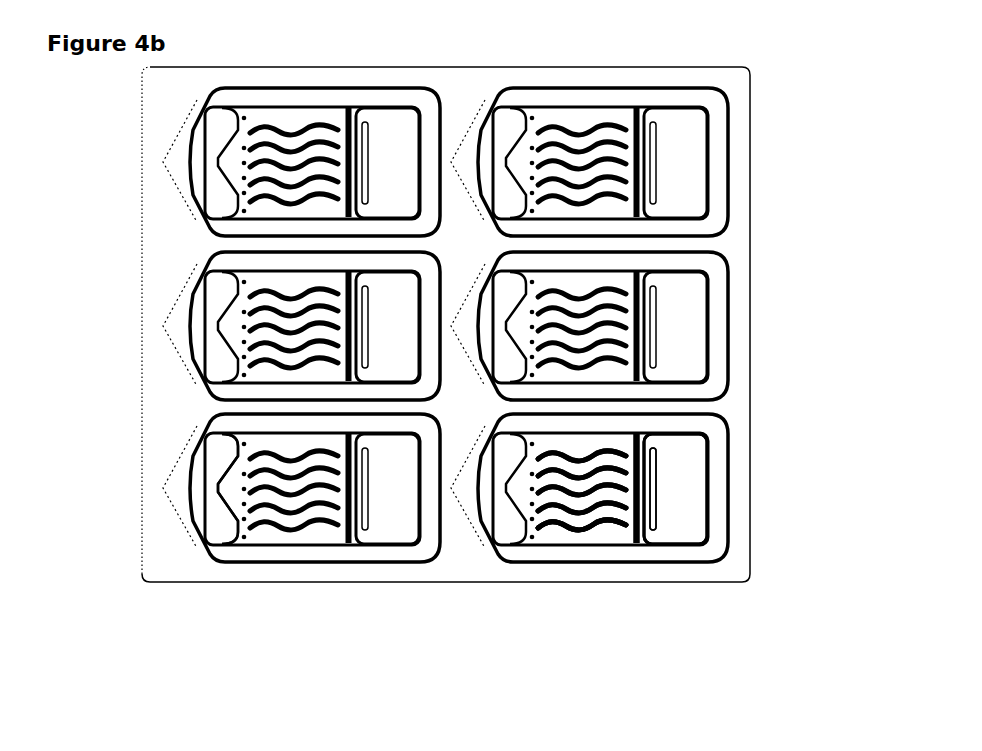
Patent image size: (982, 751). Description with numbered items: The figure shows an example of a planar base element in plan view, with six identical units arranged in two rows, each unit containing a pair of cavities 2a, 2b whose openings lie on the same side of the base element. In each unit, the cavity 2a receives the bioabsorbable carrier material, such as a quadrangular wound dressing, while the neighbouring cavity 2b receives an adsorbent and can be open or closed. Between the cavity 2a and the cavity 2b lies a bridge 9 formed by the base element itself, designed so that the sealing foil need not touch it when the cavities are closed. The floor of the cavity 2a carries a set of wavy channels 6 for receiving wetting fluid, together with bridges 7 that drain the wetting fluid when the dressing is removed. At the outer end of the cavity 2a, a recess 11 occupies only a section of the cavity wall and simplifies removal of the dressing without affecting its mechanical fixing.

The cavity 2a is at (605, 528).
The cavity 2b is at (685, 480).
The channels 6 is at (622, 522).
The bridges 7 is at (655, 523).
The bridge 9 is at (648, 485).
The recess 11 is at (233, 485).